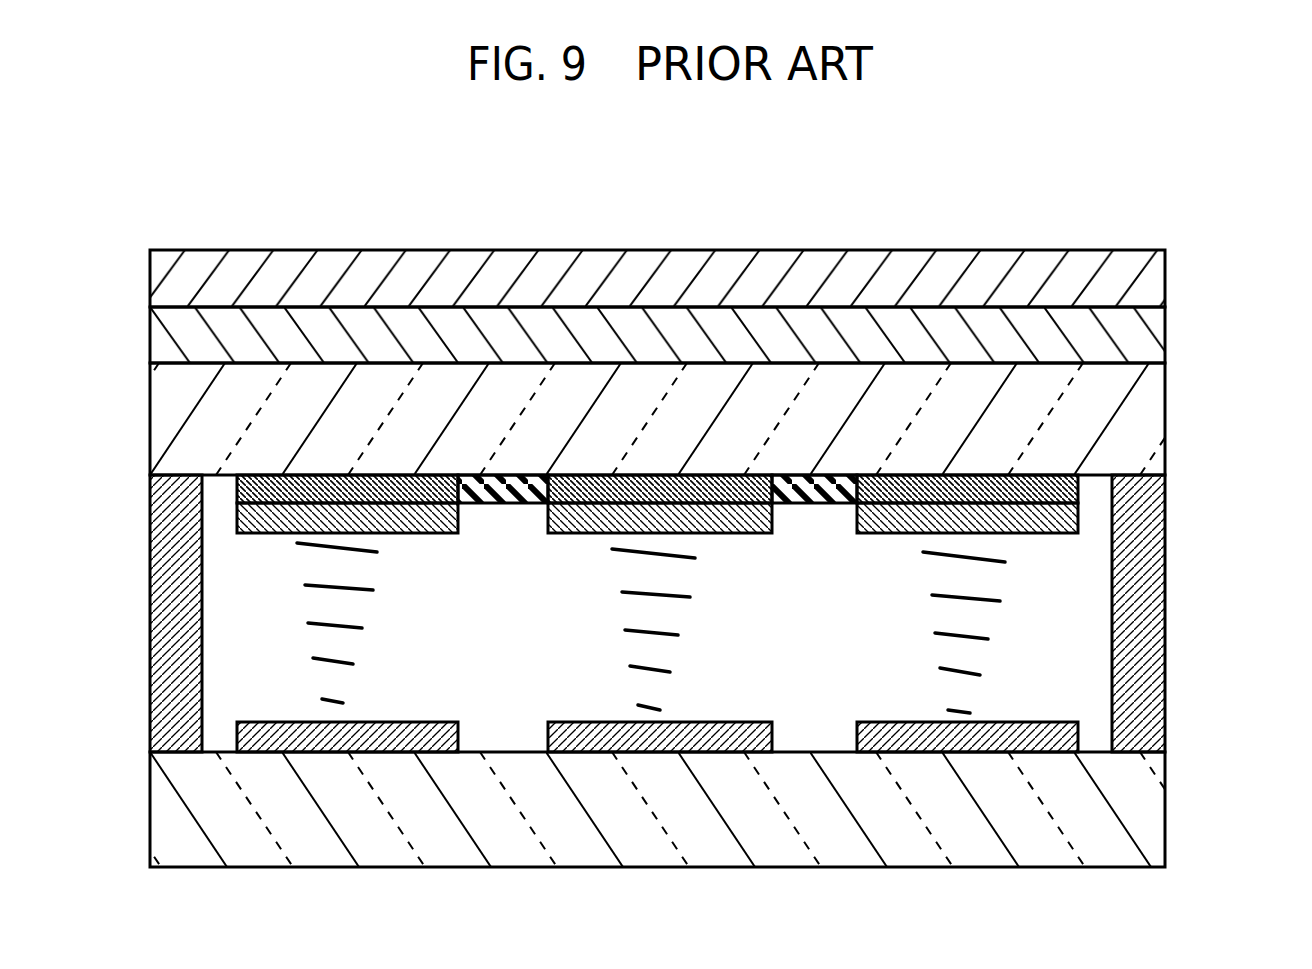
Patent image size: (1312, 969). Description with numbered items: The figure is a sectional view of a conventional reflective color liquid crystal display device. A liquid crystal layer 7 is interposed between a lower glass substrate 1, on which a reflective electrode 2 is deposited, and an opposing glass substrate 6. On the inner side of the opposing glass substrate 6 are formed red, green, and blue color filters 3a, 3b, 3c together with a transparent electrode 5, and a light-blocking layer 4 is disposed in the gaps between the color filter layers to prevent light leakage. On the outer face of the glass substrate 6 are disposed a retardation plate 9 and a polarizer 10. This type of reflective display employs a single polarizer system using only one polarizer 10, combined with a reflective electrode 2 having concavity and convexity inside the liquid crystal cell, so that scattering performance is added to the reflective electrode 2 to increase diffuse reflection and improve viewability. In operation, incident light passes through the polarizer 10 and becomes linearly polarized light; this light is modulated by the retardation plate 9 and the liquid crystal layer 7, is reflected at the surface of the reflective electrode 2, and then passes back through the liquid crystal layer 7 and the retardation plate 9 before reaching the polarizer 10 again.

The glass substrate 1 is at (1090, 818).
The reflective electrode 2 is at (1080, 733).
The red color filter 3a is at (283, 488).
The green color filter 3b is at (602, 482).
The blue color filter 3c is at (973, 482).
The light-blocking layer 4 is at (798, 484).
The transparent electrode 5 is at (1062, 522).
The opposing glass substrate 6 is at (1130, 424).
The liquid crystal layer 7 is at (1057, 647).
The retardation plate 9 is at (1108, 335).
The polarizer 10 is at (1112, 273).